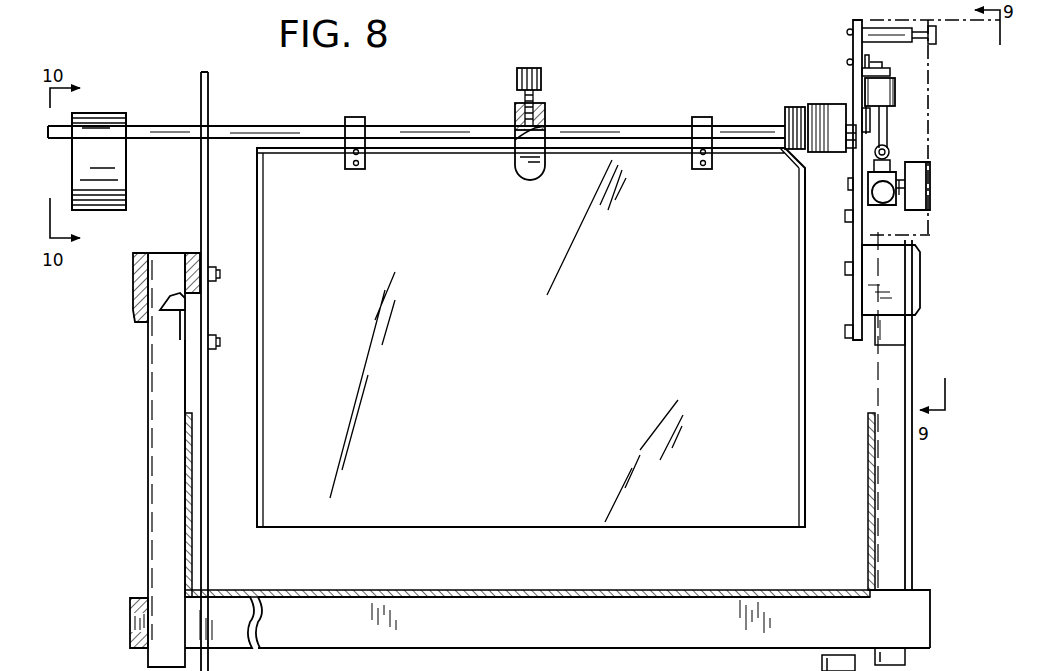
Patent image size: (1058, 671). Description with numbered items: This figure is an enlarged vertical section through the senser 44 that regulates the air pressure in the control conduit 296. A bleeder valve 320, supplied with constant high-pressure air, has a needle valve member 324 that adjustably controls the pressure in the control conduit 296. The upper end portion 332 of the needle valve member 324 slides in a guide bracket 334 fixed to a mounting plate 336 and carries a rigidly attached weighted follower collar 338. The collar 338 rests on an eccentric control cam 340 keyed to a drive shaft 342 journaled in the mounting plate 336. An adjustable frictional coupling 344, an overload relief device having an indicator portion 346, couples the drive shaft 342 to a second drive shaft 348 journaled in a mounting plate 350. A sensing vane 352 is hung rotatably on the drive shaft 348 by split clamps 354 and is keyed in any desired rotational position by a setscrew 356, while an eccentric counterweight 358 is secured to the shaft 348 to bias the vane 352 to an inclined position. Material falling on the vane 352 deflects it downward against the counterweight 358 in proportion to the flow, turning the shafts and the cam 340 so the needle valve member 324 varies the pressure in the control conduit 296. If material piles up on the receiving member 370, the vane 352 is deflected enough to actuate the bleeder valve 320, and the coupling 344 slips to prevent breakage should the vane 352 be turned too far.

The senser 44 is at (557, 630).
The control conduit 296 is at (886, 150).
The bleeder valve 320 is at (898, 210).
The needle valve member 324 is at (882, 118).
The upper end portion 332 is at (876, 62).
The guide bracket 334 is at (868, 70).
The mounting plate 336 is at (855, 28).
The weighted follower collar 338 is at (876, 92).
The eccentric control cam 340 is at (866, 118).
The drive shaft 342 is at (848, 142).
The adjustable frictional coupling 344 is at (790, 108).
The indicator portion 346 is at (786, 120).
The drive shaft 348 is at (615, 128).
The mounting plate 350 is at (202, 210).
The sensing vane 352 is at (547, 512).
The split clamps 354 is at (360, 105).
The setscrew 356 is at (542, 80).
The eccentric counterweight 358 is at (104, 113).
The receiving member 370 is at (194, 560).